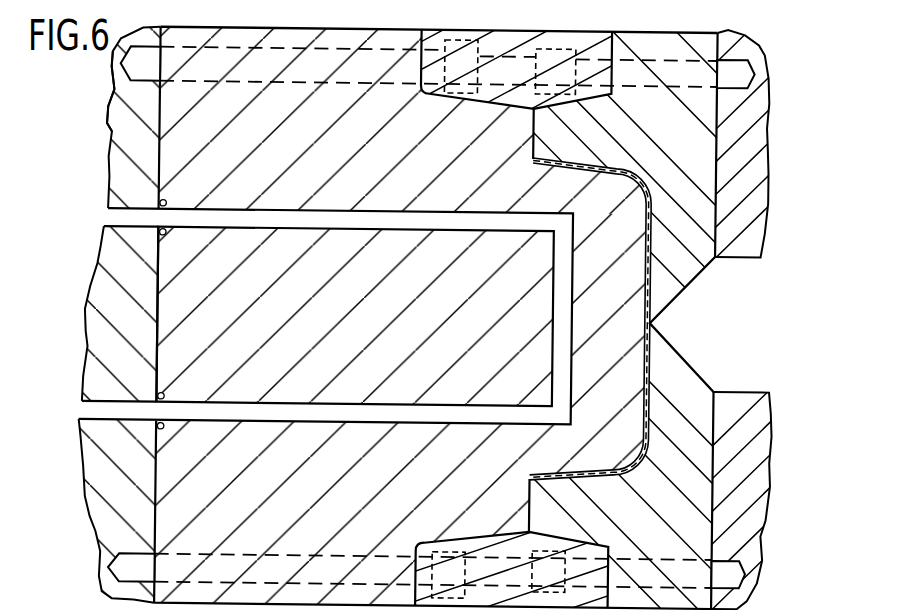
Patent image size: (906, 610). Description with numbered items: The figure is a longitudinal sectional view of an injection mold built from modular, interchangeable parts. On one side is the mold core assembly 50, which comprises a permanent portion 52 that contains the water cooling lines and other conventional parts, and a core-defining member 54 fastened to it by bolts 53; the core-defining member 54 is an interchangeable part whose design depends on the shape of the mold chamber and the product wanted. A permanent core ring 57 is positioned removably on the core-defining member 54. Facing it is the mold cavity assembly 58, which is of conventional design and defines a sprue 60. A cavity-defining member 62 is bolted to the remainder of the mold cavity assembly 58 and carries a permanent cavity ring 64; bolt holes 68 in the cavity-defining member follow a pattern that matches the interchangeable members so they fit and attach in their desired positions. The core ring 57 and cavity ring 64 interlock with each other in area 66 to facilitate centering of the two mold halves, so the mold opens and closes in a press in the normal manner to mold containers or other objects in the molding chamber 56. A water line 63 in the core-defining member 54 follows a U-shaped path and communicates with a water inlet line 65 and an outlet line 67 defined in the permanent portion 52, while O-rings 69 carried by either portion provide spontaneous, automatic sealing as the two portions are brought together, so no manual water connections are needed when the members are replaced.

The mold core assembly 50 is at (106, 103).
The permanent portion 52 is at (137, 292).
The bolts 53 is at (345, 86).
The core-defining member 54 is at (413, 286).
The molding chamber 56 is at (644, 236).
The core ring 57 is at (438, 92).
The mold cavity assembly 58 is at (768, 165).
The sprue 60 is at (753, 332).
The cavity-defining member 62 is at (653, 155).
The water line 63 is at (308, 205).
The cavity ring 64 is at (592, 30).
The water inlet line 65 is at (107, 200).
The interlock area 66 is at (502, 93).
The outlet line 67 is at (83, 388).
The bolt holes 68 is at (760, 62).
The O-rings 69 is at (165, 203).